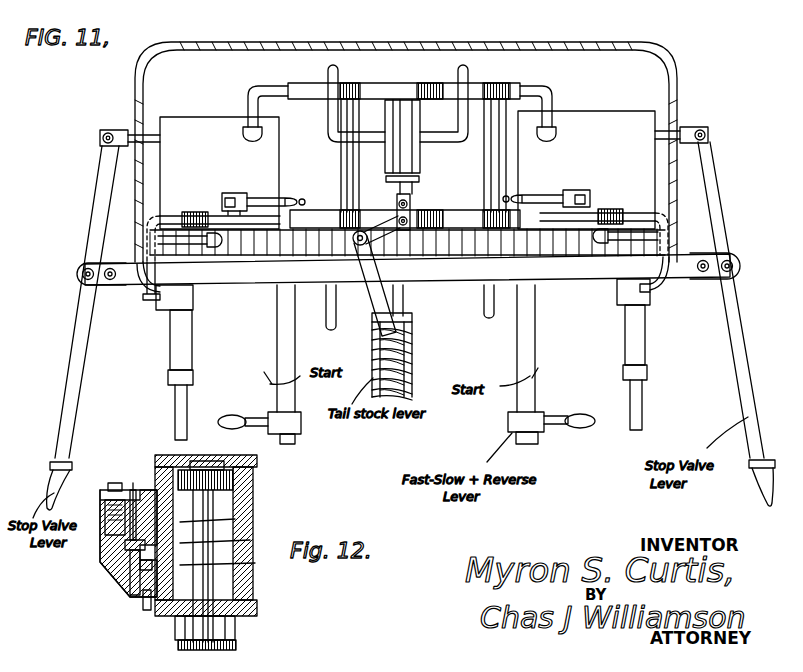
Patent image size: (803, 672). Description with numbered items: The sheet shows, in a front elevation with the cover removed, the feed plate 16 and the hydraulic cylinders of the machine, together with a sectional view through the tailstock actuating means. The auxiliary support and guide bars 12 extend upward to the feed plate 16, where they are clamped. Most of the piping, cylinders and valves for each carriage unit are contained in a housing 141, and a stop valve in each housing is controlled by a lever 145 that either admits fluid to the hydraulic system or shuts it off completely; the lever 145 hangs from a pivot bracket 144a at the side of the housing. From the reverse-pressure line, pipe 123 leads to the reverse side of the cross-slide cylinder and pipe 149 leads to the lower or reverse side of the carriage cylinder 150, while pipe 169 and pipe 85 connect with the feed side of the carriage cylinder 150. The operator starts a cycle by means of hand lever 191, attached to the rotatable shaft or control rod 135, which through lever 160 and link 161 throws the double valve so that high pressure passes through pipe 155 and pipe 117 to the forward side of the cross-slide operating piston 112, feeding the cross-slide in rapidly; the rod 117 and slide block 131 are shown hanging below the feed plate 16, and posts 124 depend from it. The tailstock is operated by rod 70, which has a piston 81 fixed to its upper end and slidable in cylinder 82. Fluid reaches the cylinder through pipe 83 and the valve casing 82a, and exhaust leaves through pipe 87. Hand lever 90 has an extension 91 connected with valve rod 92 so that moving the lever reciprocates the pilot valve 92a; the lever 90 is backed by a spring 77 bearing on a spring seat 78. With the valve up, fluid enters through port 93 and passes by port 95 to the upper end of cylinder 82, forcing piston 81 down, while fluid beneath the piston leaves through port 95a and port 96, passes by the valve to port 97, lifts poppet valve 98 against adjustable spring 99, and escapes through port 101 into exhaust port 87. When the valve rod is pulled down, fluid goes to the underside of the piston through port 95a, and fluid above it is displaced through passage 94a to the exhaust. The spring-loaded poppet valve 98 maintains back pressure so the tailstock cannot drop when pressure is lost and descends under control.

In FIG. 11, the bars 12 is at (407, 257).
In FIG. 11, the feed plate 16 is at (556, 268).
In FIG. 11, the rod 70 is at (405, 300).
In FIG. 12, the rod 70 is at (232, 656).
In FIG. 11, the spring 77 is at (413, 352).
In FIG. 11, the spring seat 78 is at (414, 316).
In FIG. 12, the piston 81 is at (205, 480).
In FIG. 11, the cylinder 82 is at (388, 108).
In FIG. 12, the cylinder 82 is at (248, 500).
In FIG. 11, the valve casing 82a is at (386, 128).
In FIG. 12, the valve casing 82a is at (107, 492).
In FIG. 11, the pipe 83 is at (441, 138).
In FIG. 12, the pipe 83 is at (250, 513).
In FIG. 11, the pipe 85 is at (466, 108).
In FIG. 11, the pipe 87 is at (364, 140).
In FIG. 12, the pipe 87 is at (132, 572).
In FIG. 11, the hand lever 90 is at (369, 283).
In FIG. 11, the extension 91 is at (382, 230).
In FIG. 11, the valve rod 92 is at (412, 197).
In FIG. 12, the valve rod 92 is at (150, 600).
In FIG. 12, the pilot valve 92a is at (140, 575).
In FIG. 12, the port 93 is at (205, 566).
In FIG. 12, the passage 94a is at (134, 485).
In FIG. 12, the port 95 is at (175, 460).
In FIG. 12, the port 95a is at (185, 630).
In FIG. 12, the port 96 is at (250, 540).
In FIG. 12, the port 97 is at (255, 563).
In FIG. 12, the poppet valve 98 is at (118, 540).
In FIG. 12, the adjustable spring 99 is at (106, 510).
In FIG. 12, the port 101 is at (130, 555).
In FIG. 11, the cross-slide operating piston 112 is at (412, 90).
In FIG. 11, the pipe 117 is at (184, 352).
In FIG. 11, the pipe 123 is at (150, 235).
In FIG. 11, the post 124 is at (326, 316).
In FIG. 11, the slide block 131 is at (170, 348).
In FIG. 11, the rotatable shaft 135 is at (276, 352).
In FIG. 11, the housing 141 is at (407, 170).
In FIG. 11, the pivot bracket 144a is at (153, 130).
In FIG. 11, the lever 145 is at (75, 354).
In FIG. 11, the pipe 149 is at (229, 223).
In FIG. 11, the carriage cylinder 150 is at (309, 83).
In FIG. 11, the pipe 155 is at (152, 296).
In FIG. 11, the lever 160 is at (257, 194).
In FIG. 11, the link 161 is at (222, 202).
In FIG. 11, the pipe 169 is at (260, 82).
In FIG. 11, the hand lever 191 is at (236, 414).